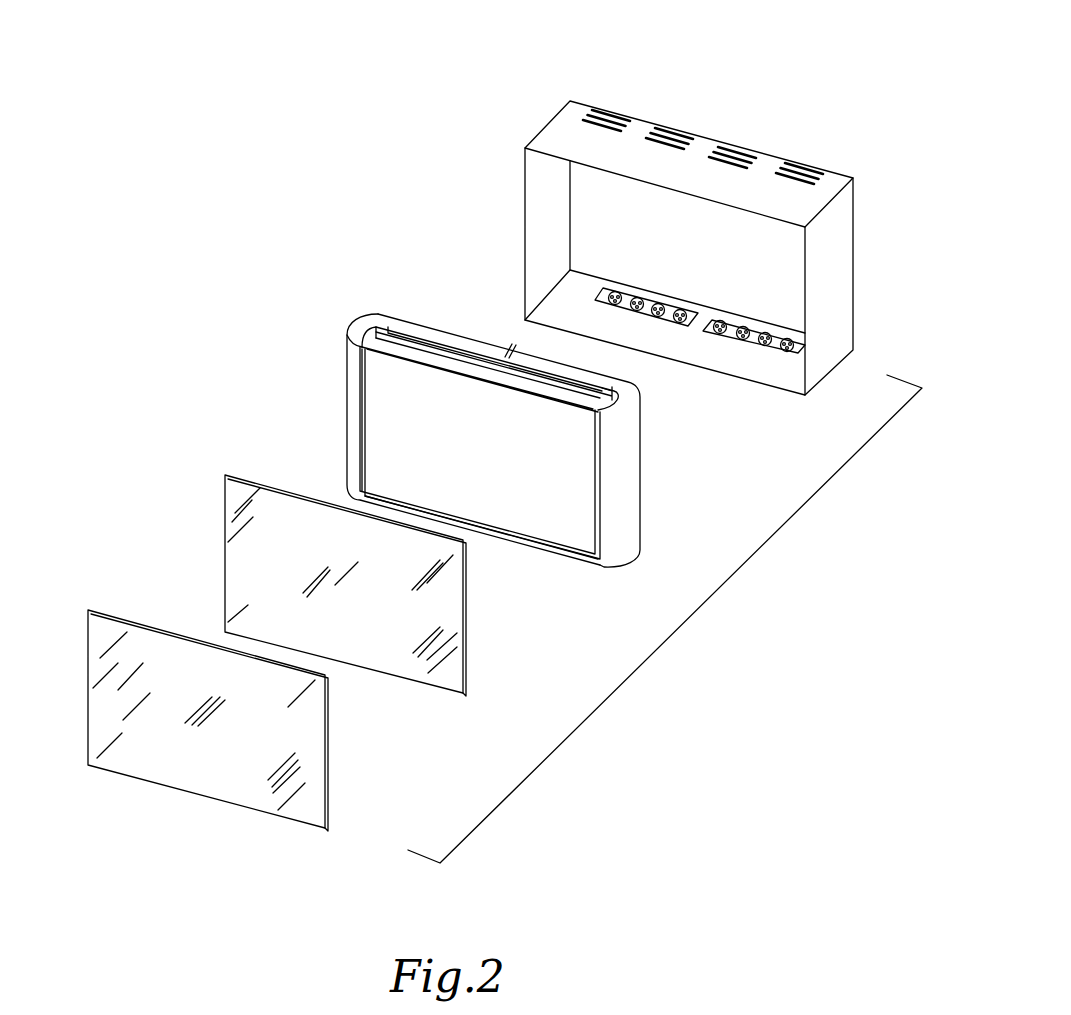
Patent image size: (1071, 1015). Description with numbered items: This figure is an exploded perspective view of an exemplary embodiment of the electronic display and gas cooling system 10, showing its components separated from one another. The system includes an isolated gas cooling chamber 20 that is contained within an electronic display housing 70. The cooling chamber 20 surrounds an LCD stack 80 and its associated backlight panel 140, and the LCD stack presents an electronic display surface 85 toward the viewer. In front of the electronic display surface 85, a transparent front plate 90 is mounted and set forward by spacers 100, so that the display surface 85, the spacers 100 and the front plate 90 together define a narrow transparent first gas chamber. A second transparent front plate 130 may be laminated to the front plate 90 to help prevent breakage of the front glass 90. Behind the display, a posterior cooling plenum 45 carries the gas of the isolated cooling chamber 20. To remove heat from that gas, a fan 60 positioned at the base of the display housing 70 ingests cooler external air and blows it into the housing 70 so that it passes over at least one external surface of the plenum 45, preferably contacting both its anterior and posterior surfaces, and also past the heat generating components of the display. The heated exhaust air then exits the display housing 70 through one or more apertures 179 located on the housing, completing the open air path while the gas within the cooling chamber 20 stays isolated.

The electronic display and gas cooling system 10 is at (665, 619).
The isolated gas cooling chamber 20 is at (310, 270).
The posterior cooling plenum 45 is at (578, 365).
The fan 60 is at (643, 317).
The electronic display housing 70 is at (523, 151).
The LCD stack 80 is at (363, 343).
The electronic display surface 85 is at (561, 530).
The transparent front plate 90 is at (225, 475).
The spacers 100 is at (428, 515).
The second transparent front plate 130 is at (147, 625).
The backlight panel 140 is at (480, 357).
The apertures 179 is at (745, 148).